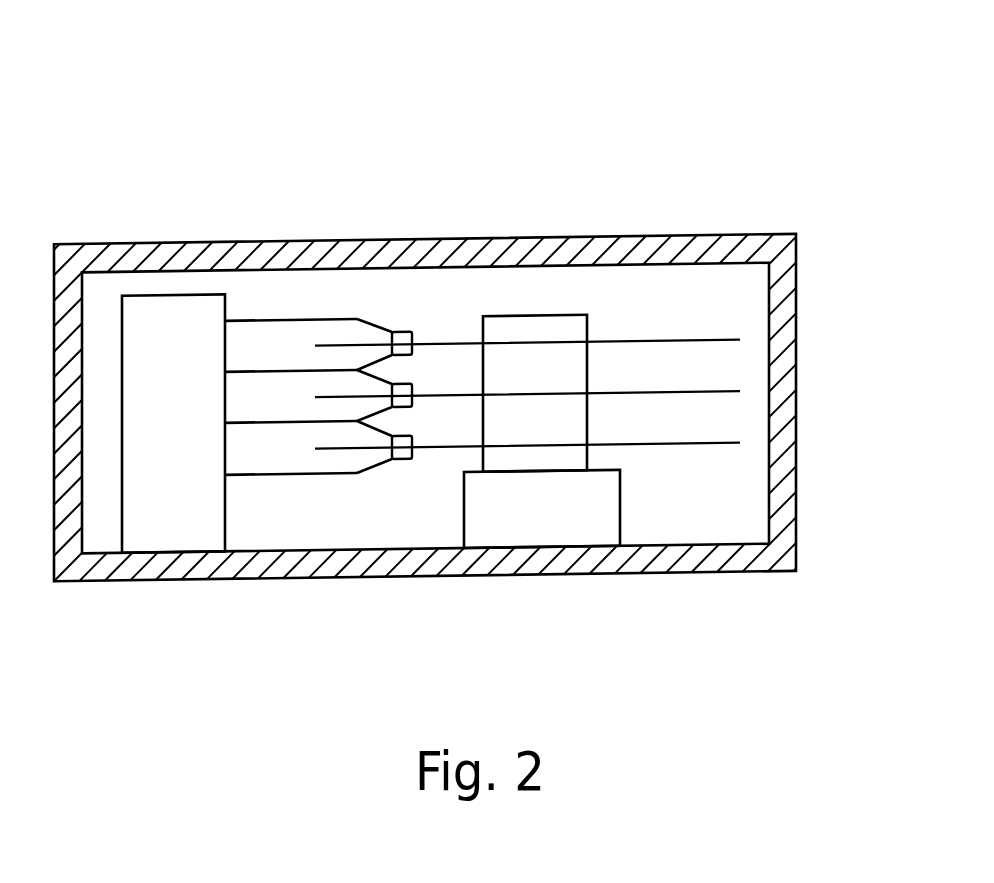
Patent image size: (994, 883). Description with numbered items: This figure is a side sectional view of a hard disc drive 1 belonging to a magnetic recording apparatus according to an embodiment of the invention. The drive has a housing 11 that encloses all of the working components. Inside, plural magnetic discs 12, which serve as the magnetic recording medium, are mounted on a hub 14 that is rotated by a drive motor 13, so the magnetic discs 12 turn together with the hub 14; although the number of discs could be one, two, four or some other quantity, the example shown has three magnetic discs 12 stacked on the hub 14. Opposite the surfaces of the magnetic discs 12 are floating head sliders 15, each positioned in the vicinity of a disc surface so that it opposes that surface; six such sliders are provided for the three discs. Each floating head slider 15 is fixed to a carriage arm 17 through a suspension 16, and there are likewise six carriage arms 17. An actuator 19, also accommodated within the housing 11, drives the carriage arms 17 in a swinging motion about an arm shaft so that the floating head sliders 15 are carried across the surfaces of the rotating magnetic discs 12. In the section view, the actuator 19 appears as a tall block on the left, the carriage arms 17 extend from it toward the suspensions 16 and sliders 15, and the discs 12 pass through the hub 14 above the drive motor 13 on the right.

The hard disc drive 1 is at (436, 133).
The housing 11 is at (738, 234).
The magnetic disc 12 is at (710, 444).
The drive motor 13 is at (543, 525).
The hub 14 is at (538, 330).
The floating head slider 15 is at (405, 470).
The suspension 16 is at (375, 470).
The carriage arm 17 is at (280, 495).
The actuator 19 is at (156, 522).